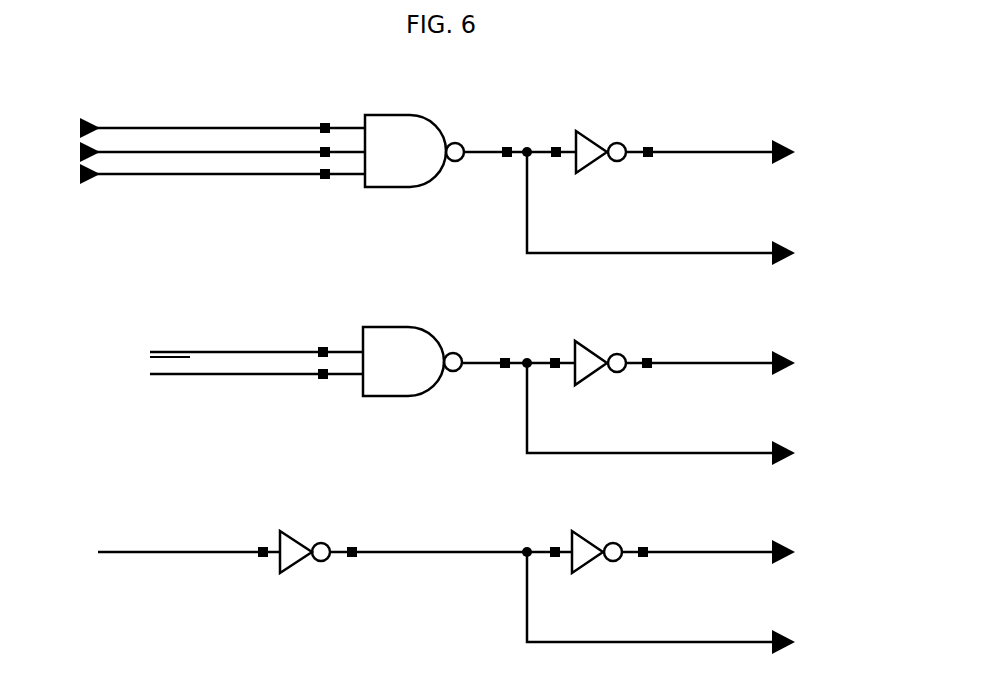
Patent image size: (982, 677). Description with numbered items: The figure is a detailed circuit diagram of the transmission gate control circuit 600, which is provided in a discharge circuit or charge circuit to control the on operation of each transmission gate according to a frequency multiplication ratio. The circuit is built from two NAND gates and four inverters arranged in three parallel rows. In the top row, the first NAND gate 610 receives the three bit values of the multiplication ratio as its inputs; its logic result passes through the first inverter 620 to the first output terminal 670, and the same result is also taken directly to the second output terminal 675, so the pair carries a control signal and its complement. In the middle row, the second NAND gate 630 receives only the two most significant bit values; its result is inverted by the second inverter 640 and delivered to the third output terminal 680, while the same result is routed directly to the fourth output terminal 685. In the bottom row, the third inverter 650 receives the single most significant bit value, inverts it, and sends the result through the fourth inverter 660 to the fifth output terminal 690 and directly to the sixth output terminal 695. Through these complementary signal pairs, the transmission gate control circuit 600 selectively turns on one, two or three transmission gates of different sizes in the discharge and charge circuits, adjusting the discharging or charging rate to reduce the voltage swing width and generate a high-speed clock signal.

The transmission gate control circuit 600 is at (703, 118).
The first NAND gate 610 is at (444, 125).
The first inverter 620 is at (602, 140).
The second NAND gate 630 is at (440, 336).
The second inverter 640 is at (601, 352).
The third inverter 650 is at (306, 540).
The fourth inverter 660 is at (600, 540).
The first output terminal 670 is at (786, 144).
The second output terminal 675 is at (786, 245).
The third output terminal 680 is at (784, 355).
The fourth output terminal 685 is at (786, 445).
The fifth output terminal 690 is at (784, 545).
The sixth output terminal 695 is at (786, 635).